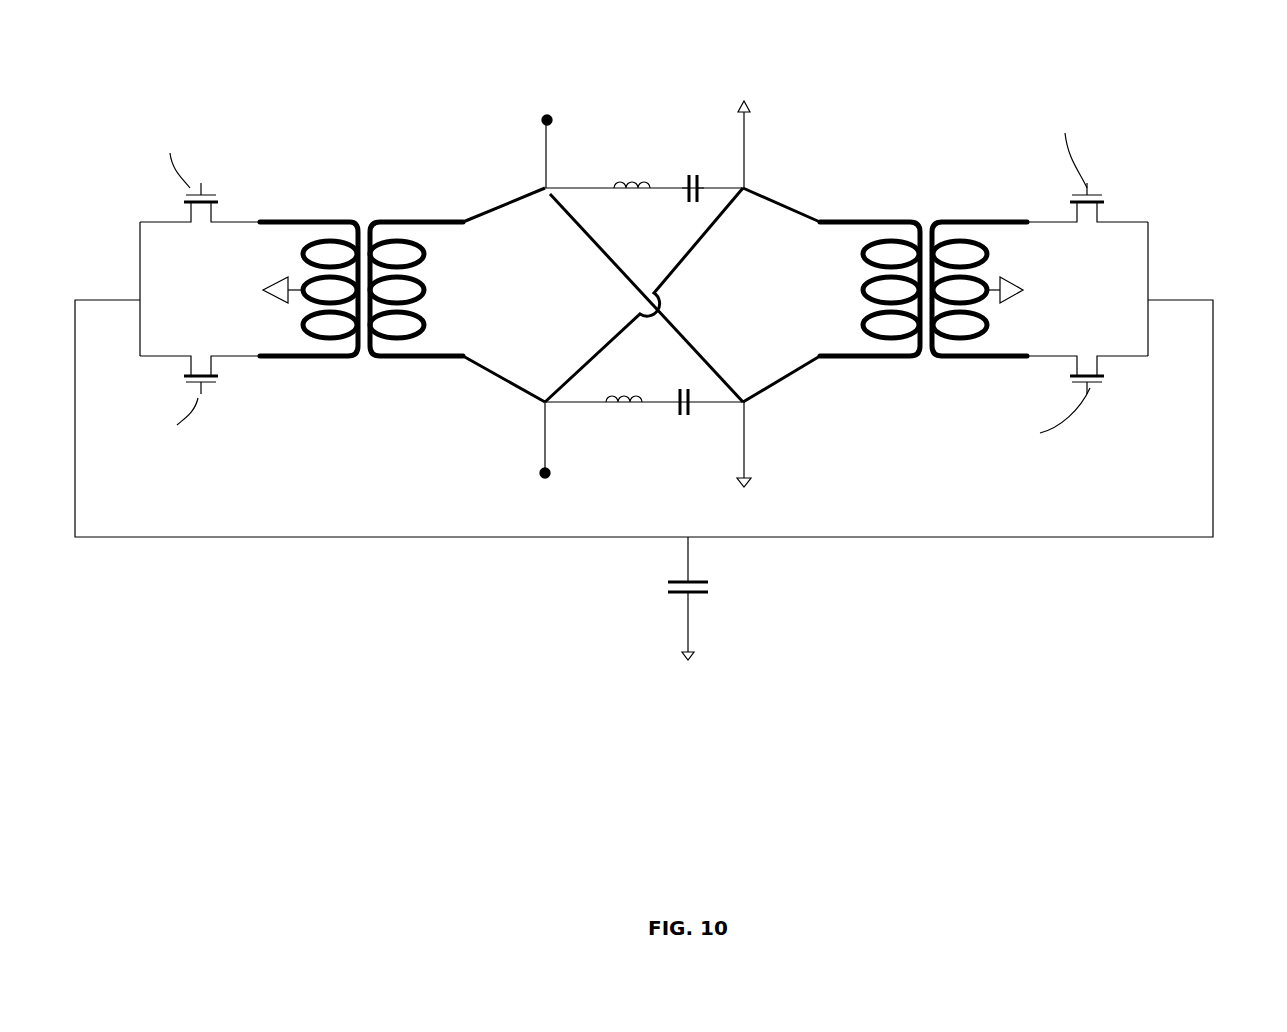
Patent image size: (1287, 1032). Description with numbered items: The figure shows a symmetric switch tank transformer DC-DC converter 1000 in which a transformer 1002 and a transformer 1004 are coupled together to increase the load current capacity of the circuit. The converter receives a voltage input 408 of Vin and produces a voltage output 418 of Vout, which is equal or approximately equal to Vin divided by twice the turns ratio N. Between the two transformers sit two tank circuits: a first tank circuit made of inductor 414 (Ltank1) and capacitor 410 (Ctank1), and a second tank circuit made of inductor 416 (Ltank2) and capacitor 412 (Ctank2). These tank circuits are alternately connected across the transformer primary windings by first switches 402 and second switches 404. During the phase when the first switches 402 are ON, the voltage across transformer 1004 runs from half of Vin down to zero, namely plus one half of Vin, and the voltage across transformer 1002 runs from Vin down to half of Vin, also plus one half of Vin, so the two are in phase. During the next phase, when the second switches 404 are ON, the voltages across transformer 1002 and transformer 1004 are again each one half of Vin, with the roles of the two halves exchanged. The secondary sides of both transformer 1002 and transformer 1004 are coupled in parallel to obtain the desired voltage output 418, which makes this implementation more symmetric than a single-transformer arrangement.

The symmetric switch tank transformer DC-DC converter 1000 is at (866, 66).
The transformer 1002 is at (336, 366).
The transformer 1004 is at (915, 196).
The first switches 402 is at (548, 158).
The second switches 404 is at (737, 168).
The voltage input 408 is at (539, 508).
The capacitor 410 is at (693, 173).
The capacitor 412 is at (678, 417).
The inductor 414 is at (631, 176).
The inductor 416 is at (610, 388).
The voltage output 418 is at (1262, 290).